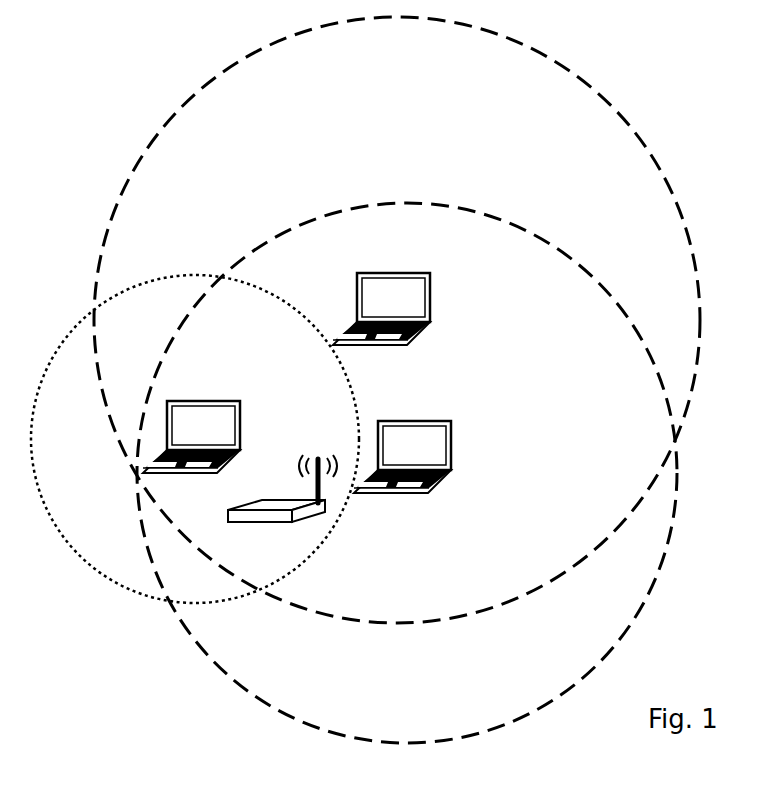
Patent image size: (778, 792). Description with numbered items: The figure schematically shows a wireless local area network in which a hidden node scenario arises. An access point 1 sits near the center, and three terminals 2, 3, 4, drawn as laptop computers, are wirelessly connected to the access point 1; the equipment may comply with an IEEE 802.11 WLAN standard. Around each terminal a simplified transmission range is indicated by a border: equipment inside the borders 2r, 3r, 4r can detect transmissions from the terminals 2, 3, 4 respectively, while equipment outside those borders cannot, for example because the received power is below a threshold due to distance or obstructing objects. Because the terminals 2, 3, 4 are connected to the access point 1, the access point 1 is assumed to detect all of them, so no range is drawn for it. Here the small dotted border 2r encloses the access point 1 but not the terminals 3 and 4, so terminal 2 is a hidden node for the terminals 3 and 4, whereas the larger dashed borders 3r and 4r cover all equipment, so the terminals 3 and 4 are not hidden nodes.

The access point 1 is at (273, 523).
The terminal 2 is at (191, 401).
The terminal 3 is at (420, 421).
The terminal 4 is at (420, 273).
The transmission range border 2r is at (76, 332).
The transmission range border 3r is at (678, 456).
The transmission range border 4r is at (683, 219).